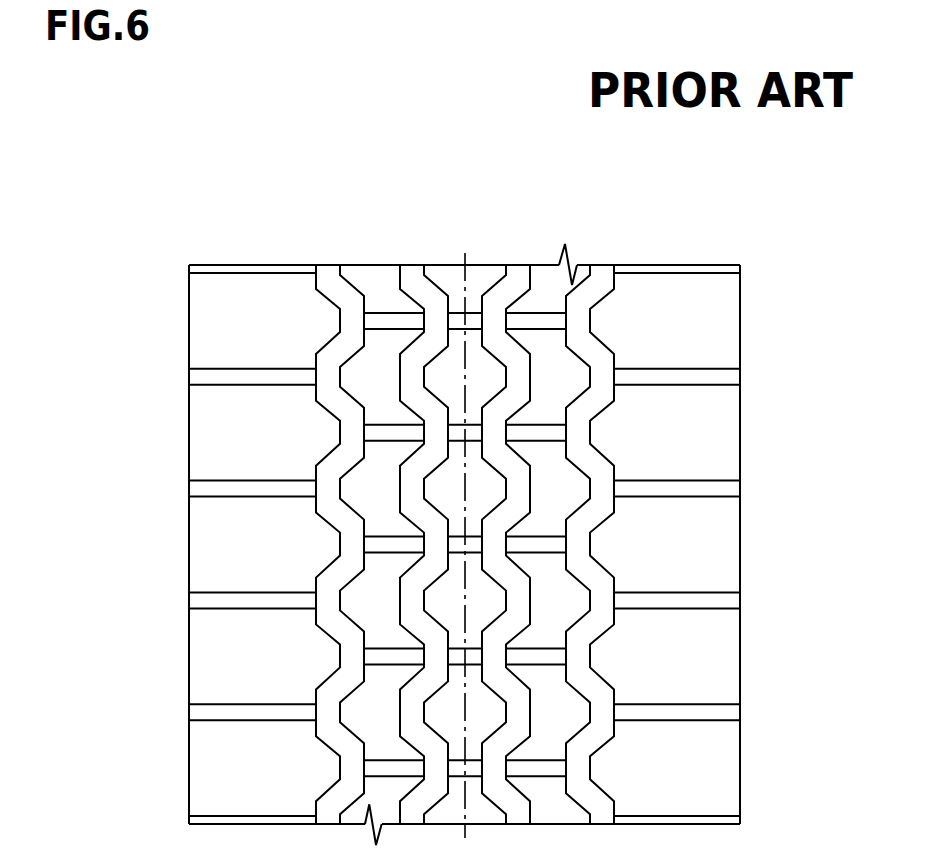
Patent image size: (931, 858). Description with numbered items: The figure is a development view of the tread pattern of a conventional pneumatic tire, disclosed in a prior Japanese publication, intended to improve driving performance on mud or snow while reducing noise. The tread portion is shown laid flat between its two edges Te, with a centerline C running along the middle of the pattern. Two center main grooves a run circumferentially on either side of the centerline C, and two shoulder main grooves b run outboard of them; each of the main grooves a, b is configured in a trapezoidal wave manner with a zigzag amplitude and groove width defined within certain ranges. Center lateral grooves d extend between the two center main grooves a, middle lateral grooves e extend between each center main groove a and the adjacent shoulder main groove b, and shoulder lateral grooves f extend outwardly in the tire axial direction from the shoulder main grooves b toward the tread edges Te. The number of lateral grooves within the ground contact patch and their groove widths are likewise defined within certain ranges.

The tread edge Te is at (189, 304).
The shoulder lateral grooves f is at (253, 367).
The shoulder main grooves b is at (332, 275).
The middle lateral grooves e is at (389, 320).
The center main grooves a is at (415, 277).
The center lateral grooves d is at (458, 322).
The tire equator C is at (465, 532).